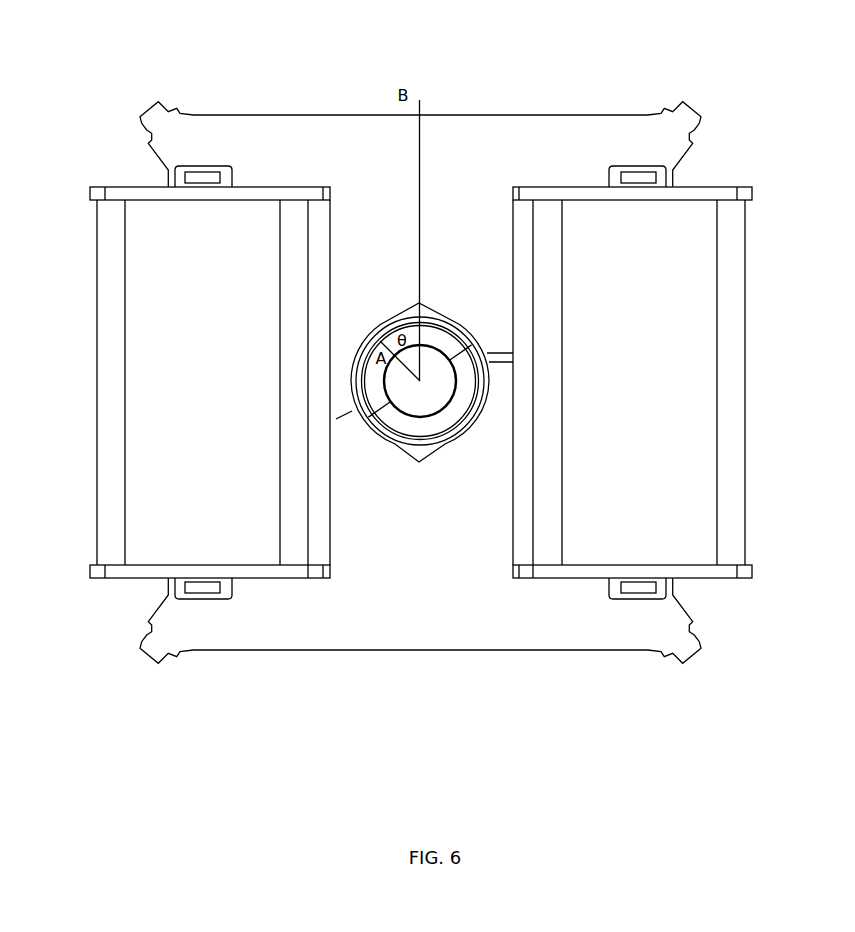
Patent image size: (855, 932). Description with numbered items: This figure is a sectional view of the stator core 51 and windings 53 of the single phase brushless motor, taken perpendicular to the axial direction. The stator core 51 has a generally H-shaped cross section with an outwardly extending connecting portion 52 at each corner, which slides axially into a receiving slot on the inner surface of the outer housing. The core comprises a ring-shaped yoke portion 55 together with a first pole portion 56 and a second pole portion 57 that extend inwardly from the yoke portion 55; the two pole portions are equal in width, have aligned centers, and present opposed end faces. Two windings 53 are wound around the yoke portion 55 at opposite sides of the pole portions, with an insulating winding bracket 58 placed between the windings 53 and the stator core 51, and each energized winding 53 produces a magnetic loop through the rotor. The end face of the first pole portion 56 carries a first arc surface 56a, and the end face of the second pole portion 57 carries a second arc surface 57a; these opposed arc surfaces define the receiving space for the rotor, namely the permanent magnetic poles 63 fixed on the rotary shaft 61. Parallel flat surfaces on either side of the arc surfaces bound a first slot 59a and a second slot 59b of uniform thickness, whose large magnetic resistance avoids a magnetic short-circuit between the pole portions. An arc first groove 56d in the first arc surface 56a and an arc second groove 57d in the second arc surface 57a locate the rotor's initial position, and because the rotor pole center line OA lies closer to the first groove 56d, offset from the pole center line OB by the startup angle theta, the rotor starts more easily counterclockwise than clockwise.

The stator core 51 is at (252, 96).
The connecting portion 52 is at (687, 120).
The windings 53 is at (165, 255).
The yoke portion 55 is at (465, 147).
The first pole portion 56 is at (385, 242).
The first arc surface 56a is at (450, 313).
The first groove 56d is at (415, 300).
The second pole portion 57 is at (395, 500).
The second arc surface 57a is at (457, 447).
The second groove 57d is at (421, 462).
The insulating winding bracket 58 is at (265, 572).
The first slot 59a is at (503, 358).
The second slot 59b is at (353, 400).
The rotary shaft 61 is at (432, 395).
The permanent magnetic poles 63 is at (368, 417).